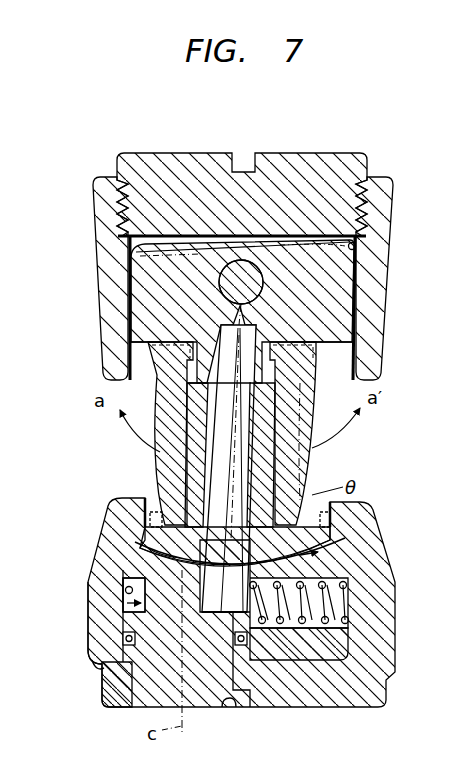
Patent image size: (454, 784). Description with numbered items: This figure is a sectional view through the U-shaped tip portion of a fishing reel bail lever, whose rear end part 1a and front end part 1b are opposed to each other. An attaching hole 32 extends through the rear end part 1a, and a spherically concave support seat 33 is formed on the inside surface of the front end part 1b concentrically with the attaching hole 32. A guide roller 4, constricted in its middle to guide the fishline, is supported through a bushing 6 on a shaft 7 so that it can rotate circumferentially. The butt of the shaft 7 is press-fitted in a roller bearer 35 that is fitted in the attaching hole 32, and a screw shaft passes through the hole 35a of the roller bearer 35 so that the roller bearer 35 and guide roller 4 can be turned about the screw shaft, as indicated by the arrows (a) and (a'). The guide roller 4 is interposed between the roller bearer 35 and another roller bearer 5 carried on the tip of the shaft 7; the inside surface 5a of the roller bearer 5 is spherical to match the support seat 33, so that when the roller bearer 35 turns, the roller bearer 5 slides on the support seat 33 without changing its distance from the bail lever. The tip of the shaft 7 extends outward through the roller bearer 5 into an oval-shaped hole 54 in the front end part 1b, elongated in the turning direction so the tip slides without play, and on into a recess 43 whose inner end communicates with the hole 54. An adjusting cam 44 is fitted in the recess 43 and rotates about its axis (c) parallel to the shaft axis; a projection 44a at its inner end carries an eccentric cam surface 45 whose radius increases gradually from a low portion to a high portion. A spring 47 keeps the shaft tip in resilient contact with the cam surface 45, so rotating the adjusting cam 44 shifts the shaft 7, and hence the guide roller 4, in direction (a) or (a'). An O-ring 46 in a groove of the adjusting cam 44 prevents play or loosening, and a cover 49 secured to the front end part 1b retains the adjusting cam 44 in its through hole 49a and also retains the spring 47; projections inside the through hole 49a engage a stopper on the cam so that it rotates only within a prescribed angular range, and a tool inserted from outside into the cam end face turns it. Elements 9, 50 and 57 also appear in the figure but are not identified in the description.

The rear end part 1a is at (390, 204).
The front end part 1b is at (97, 672).
The guide roller 4 is at (162, 478).
The roller bearer 5 is at (340, 537).
The inside surface 5a is at (360, 553).
The bushing 6 is at (258, 463).
The shaft 7 is at (218, 455).
The pin / shaft 9 is at (248, 275).
The attaching hole 32 is at (360, 252).
The support seat 33 is at (148, 522).
The roller bearer 35 is at (145, 285).
The hole 35a is at (205, 250).
The recess 43 is at (128, 588).
The adjusting cam 44 is at (150, 703).
The projection 44a is at (123, 636).
The eccentric cam surface 45 is at (125, 601).
The O-ring 46 is at (88, 663).
The spring 47 is at (325, 597).
The cover 49 is at (325, 708).
The through hole 49a is at (228, 705).
The spring support 50 is at (345, 607).
The oval-shaped hole 54 is at (157, 553).
The cap plate 57 is at (323, 162).